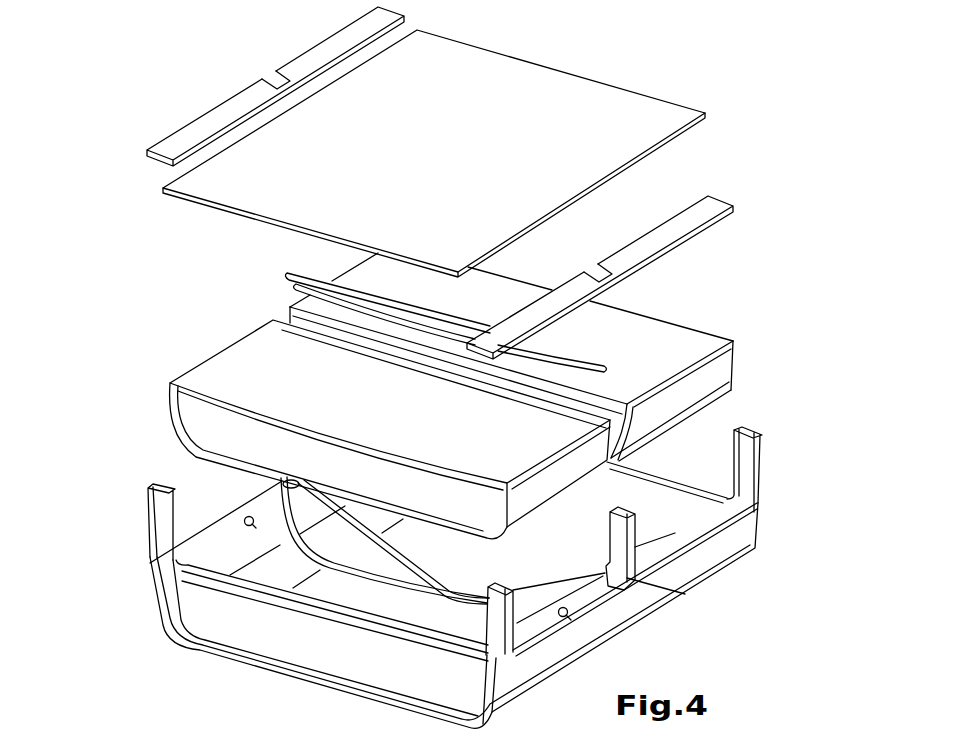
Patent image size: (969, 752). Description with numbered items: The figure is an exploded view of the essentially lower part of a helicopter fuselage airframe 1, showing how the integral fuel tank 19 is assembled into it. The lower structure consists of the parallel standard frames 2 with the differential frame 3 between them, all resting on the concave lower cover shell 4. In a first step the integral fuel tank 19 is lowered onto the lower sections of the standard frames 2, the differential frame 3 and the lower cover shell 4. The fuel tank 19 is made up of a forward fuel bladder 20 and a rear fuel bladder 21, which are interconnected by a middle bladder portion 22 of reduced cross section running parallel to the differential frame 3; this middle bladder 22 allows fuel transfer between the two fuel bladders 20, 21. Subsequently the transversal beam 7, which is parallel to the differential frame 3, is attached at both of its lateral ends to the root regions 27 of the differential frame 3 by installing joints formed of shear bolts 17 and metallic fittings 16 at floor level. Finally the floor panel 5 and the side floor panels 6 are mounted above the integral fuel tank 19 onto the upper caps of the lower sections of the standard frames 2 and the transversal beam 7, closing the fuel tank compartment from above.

The fuselage airframe 1 is at (196, 106).
The standard frames 2 is at (137, 505).
The differential frame 3 is at (656, 522).
The lower cover shell 4 is at (148, 632).
The floor panel 5 is at (722, 112).
The side floor panels 6 is at (136, 157).
The transversal beam 7 is at (625, 366).
The metallic fittings 16 is at (276, 493).
The shear bolts 17 is at (238, 523).
The integral fuel tank 19 is at (236, 320).
The forward fuel bladder 20 is at (213, 378).
The rear fuel bladder 21 is at (721, 372).
The middle bladder portion 22 is at (383, 350).
The root regions 27 is at (565, 595).